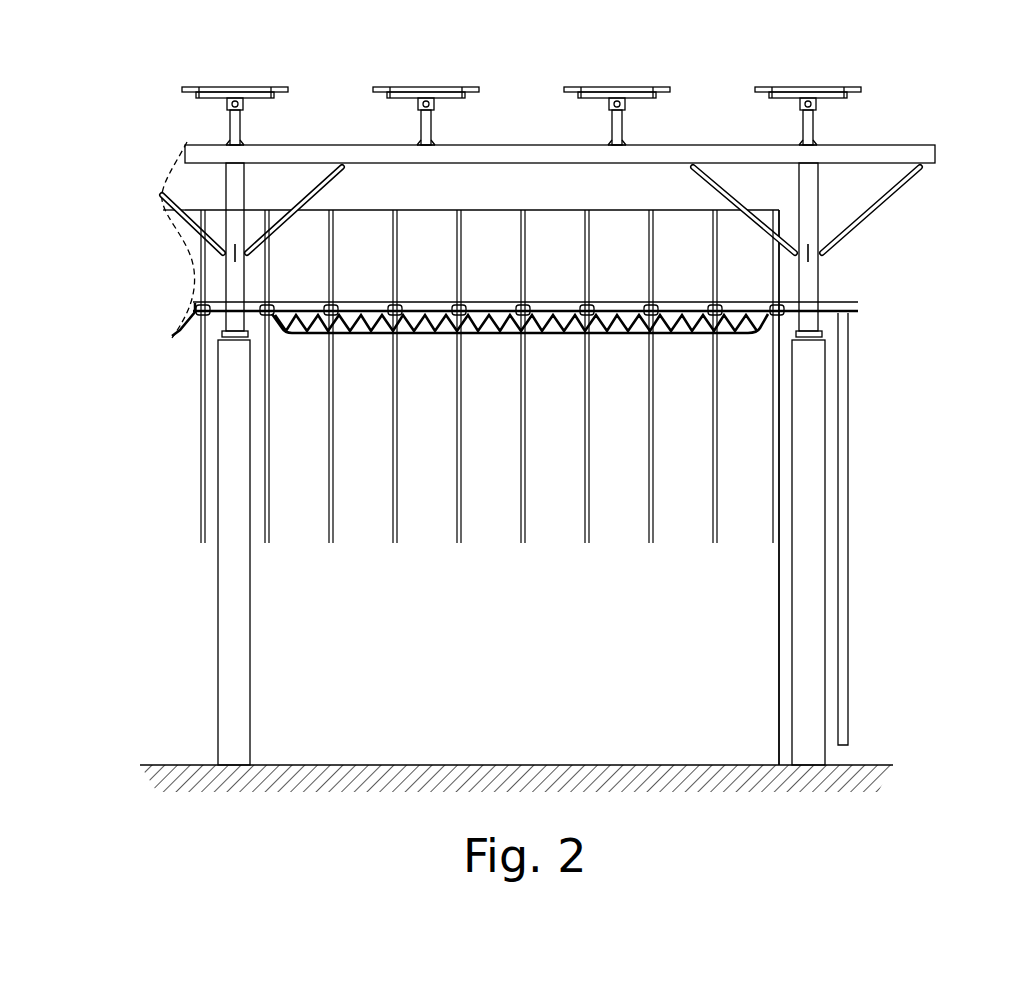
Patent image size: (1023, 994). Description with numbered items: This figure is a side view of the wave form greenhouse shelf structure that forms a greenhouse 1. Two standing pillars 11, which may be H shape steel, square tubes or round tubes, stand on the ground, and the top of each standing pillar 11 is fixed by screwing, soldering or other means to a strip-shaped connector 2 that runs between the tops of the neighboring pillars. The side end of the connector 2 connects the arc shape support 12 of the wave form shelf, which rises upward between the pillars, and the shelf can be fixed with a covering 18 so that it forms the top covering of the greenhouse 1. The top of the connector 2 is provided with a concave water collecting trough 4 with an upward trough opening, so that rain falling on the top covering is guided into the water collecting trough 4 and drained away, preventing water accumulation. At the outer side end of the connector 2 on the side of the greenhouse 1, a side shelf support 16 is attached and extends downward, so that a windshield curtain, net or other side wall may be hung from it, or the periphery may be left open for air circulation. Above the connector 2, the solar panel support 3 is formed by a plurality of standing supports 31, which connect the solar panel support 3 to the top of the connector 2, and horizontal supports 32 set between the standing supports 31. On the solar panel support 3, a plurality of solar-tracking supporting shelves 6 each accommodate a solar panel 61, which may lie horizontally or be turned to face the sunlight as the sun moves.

The greenhouse 1 is at (166, 401).
The connector 2 is at (680, 312).
The solar panel support 3 is at (983, 202).
The water collecting trough 4 is at (749, 310).
The solar-tracking supporting shelf 6 is at (232, 126).
The standing pillar 11 is at (233, 628).
The arc shape support 12 is at (524, 229).
The side shelf support 16 is at (713, 500).
The covering 18 is at (418, 208).
The standing support 31 is at (814, 278).
The horizontal support 32 is at (880, 160).
The solar panel 61 is at (230, 86).